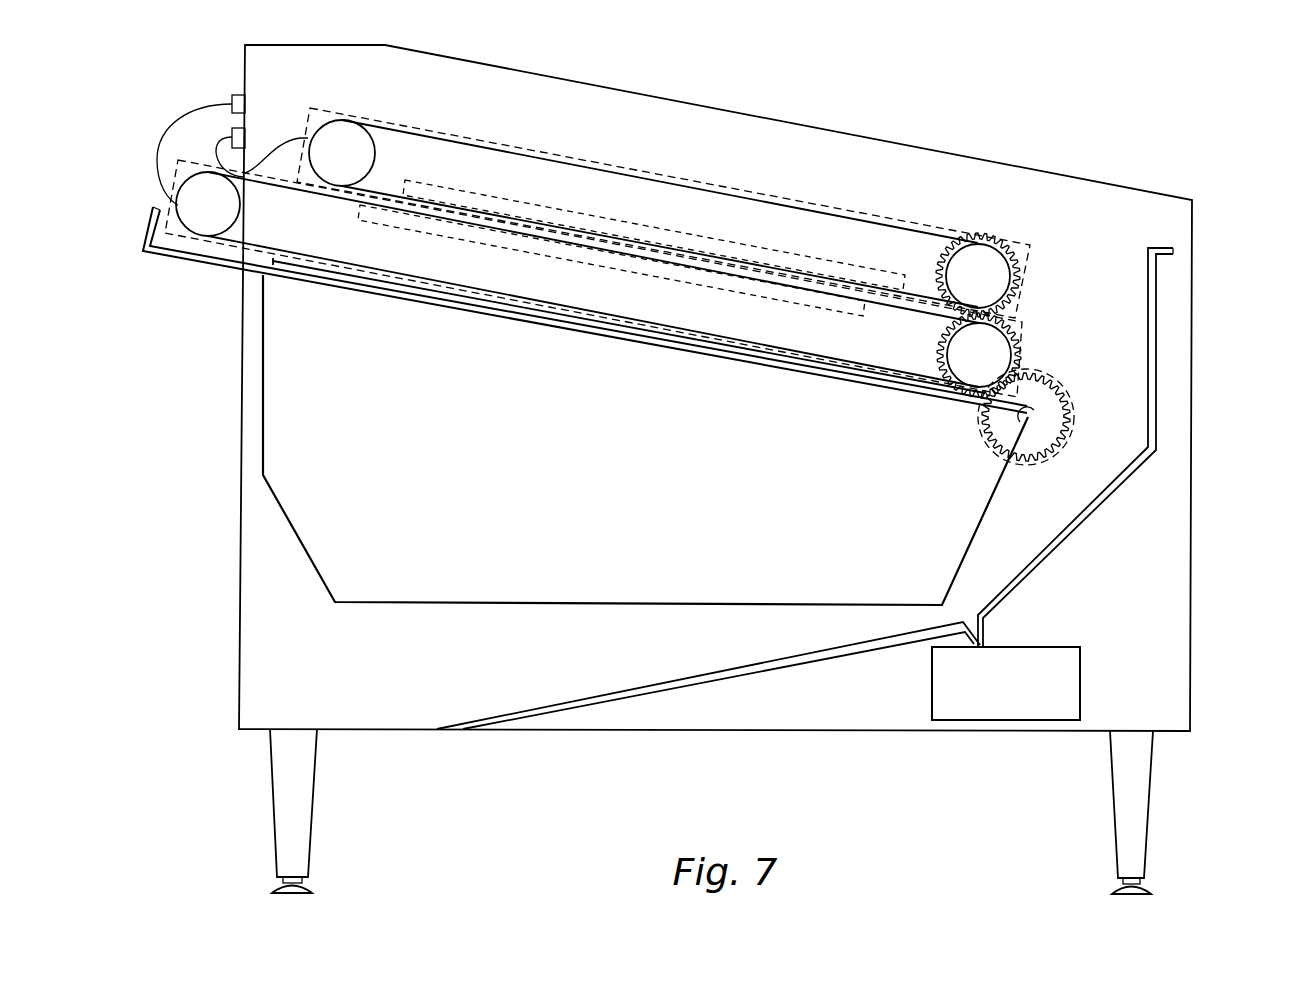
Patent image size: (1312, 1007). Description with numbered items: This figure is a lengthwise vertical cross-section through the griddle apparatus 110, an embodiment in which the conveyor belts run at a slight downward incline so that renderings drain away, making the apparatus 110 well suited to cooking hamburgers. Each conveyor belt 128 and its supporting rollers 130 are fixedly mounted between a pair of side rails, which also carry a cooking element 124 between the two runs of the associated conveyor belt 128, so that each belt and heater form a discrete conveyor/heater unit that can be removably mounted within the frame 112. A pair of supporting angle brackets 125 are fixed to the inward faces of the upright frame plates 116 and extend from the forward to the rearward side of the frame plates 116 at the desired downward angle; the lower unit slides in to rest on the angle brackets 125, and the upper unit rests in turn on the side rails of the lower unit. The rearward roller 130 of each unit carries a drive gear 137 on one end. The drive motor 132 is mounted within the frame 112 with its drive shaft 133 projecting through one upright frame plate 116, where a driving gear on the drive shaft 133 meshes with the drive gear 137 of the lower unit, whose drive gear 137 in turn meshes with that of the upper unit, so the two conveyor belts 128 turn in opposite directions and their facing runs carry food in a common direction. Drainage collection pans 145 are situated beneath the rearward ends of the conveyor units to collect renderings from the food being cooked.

The griddle apparatus 110 is at (200, 342).
The frame 112 is at (238, 550).
The upright frame plate 116 is at (1158, 580).
The cooking element 124 is at (583, 218).
The supporting angle bracket 125 is at (428, 293).
The conveyor belt 128 is at (790, 202).
The supporting roller 130 is at (339, 152).
The drive motor 132 is at (1067, 395).
The drive shaft 133 is at (1020, 422).
The drive gear 137 is at (985, 236).
The drainage collection pan 145 is at (263, 402).